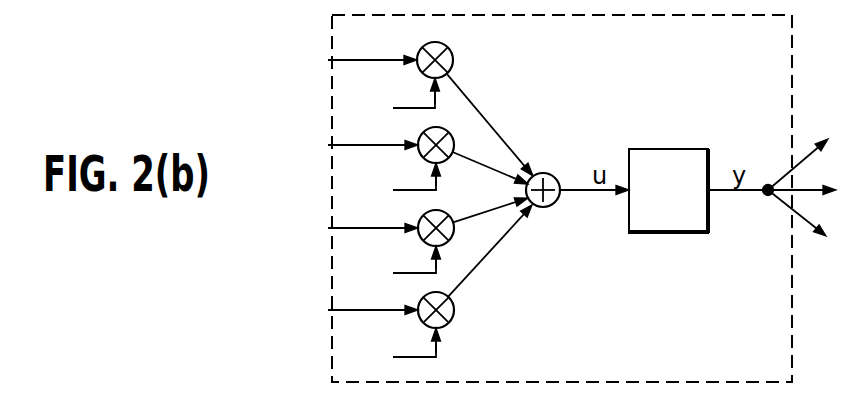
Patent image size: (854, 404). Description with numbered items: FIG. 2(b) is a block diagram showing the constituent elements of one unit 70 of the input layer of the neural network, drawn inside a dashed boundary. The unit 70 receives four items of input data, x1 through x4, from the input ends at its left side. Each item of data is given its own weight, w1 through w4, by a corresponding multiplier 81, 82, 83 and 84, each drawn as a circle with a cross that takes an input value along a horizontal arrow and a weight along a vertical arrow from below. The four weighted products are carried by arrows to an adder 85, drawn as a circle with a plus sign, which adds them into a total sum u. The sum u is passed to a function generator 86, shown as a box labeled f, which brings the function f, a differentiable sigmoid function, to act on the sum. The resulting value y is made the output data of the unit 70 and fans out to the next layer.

The unit 70 is at (514, 204).
The multiplier 81 is at (449, 70).
The multiplier 82 is at (454, 141).
The multiplier 83 is at (452, 237).
The multiplier 84 is at (451, 322).
The adder 85 is at (578, 164).
The function generator 86 is at (650, 149).